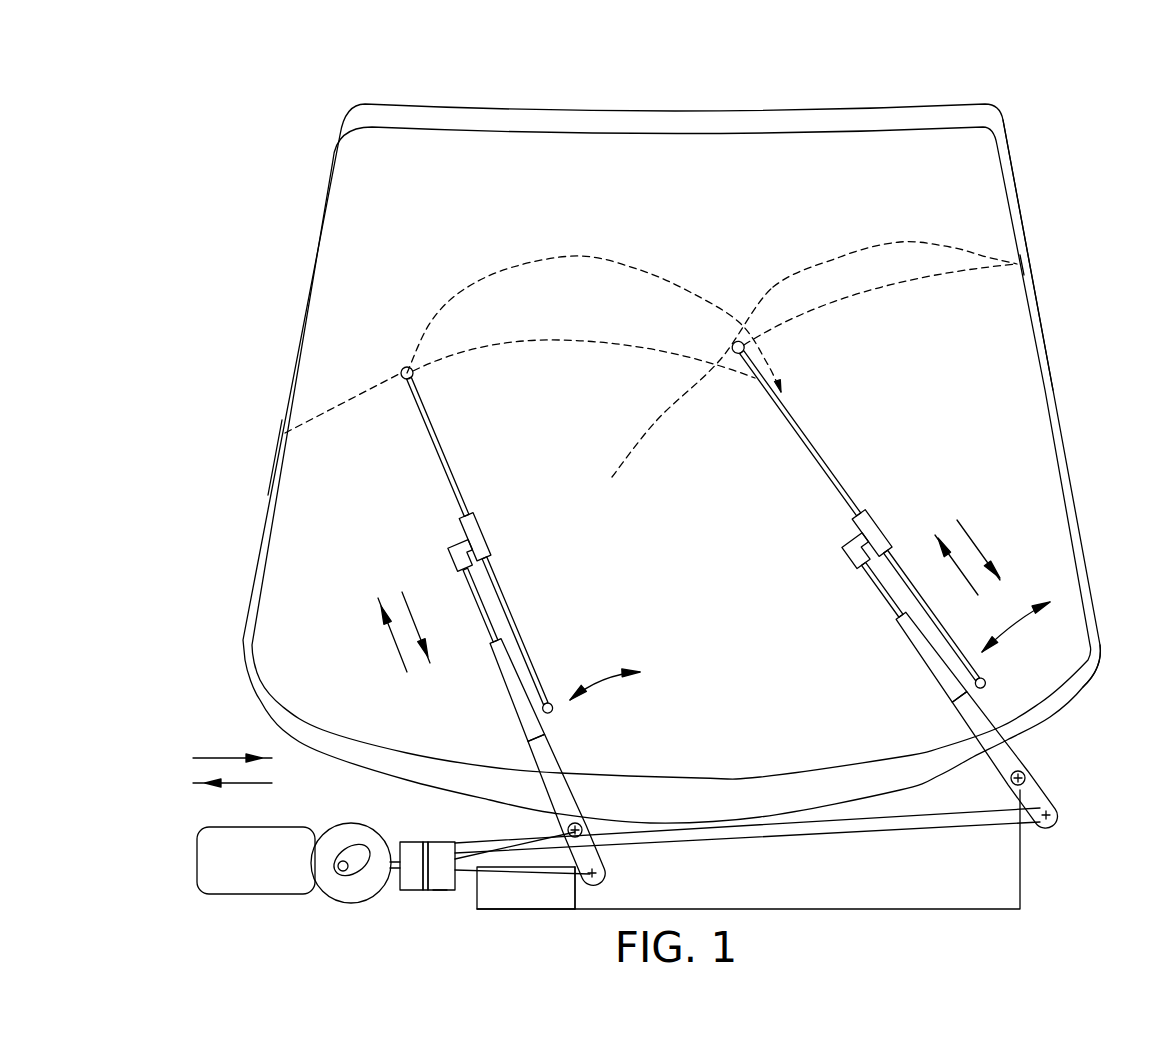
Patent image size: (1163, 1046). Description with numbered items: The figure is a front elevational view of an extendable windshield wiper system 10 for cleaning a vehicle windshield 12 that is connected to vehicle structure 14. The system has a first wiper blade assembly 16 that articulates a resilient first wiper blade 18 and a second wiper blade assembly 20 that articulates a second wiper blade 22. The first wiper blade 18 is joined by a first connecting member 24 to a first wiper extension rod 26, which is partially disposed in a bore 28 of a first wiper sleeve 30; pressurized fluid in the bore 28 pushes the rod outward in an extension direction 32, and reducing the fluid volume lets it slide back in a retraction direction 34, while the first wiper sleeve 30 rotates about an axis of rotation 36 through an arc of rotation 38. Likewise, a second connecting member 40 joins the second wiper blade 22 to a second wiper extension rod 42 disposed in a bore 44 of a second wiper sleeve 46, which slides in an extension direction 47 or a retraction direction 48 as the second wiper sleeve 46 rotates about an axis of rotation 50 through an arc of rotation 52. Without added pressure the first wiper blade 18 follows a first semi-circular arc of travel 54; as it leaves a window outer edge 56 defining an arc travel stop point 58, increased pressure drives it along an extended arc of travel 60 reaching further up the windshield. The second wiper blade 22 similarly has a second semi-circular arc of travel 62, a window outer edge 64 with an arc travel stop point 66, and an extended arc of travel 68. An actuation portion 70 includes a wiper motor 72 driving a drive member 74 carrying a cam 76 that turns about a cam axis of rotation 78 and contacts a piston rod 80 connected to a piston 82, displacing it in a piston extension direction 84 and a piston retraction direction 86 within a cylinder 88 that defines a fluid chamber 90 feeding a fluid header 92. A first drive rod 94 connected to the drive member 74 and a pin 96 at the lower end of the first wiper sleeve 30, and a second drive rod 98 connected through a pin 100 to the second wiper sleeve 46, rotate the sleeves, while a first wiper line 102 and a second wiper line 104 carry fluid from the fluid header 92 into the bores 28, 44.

The extendable windshield wiper system 10 is at (1022, 92).
The vehicle windshield 12 is at (1017, 353).
The structure 14 is at (1101, 662).
The first wiper blade assembly 16 is at (489, 616).
The first wiper blade 18 is at (452, 437).
The second wiper blade assembly 20 is at (923, 585).
The second wiper blade 22 is at (810, 430).
The first connecting member 24 is at (457, 545).
The first wiper extension rod 26 is at (468, 612).
The bore 28 is at (560, 757).
The first wiper sleeve 30 is at (512, 701).
The extension direction 32 is at (426, 633).
The retraction direction 34 is at (392, 648).
The axis of rotation 36 is at (580, 829).
The arc of rotation 38 is at (603, 679).
The second connecting member 40 is at (846, 545).
The second wiper extension rod 42 is at (880, 592).
The bore 44 is at (985, 706).
The second wiper sleeve 46 is at (940, 680).
The extension direction 47 is at (975, 588).
The retraction direction 48 is at (973, 538).
The axis of rotation 50 is at (1025, 780).
The arc of rotation 52 is at (1017, 624).
The first semi-circular arc of travel 54 is at (398, 373).
The window outer edge 56 is at (272, 488).
The arc travel stop point 58 is at (286, 433).
The extended arc of travel 60 is at (584, 256).
The second semi-circular arc of travel 62 is at (657, 421).
The window outer edge 64 is at (1021, 186).
The arc travel stop point 66 is at (1022, 264).
The extended arc of travel 68 is at (903, 242).
The actuation portion 70 is at (338, 831).
The wiper motor 72 is at (257, 896).
The drive member 74 is at (345, 830).
The cam 76 is at (368, 855).
The cam axis of rotation 78 is at (340, 870).
The piston rod 80 is at (394, 880).
The piston 82 is at (425, 890).
The piston extension direction 84 is at (224, 757).
The piston retraction direction 86 is at (242, 784).
The cylinder 88 is at (452, 842).
The fluid chamber 90 is at (440, 890).
The fluid header 92 is at (538, 909).
The first drive rod 94 is at (548, 872).
The pin 96 is at (600, 872).
The second drive rod 98 is at (857, 828).
The pin 100 is at (1052, 816).
The first wiper line 102 is at (598, 895).
The second wiper line 104 is at (1022, 872).